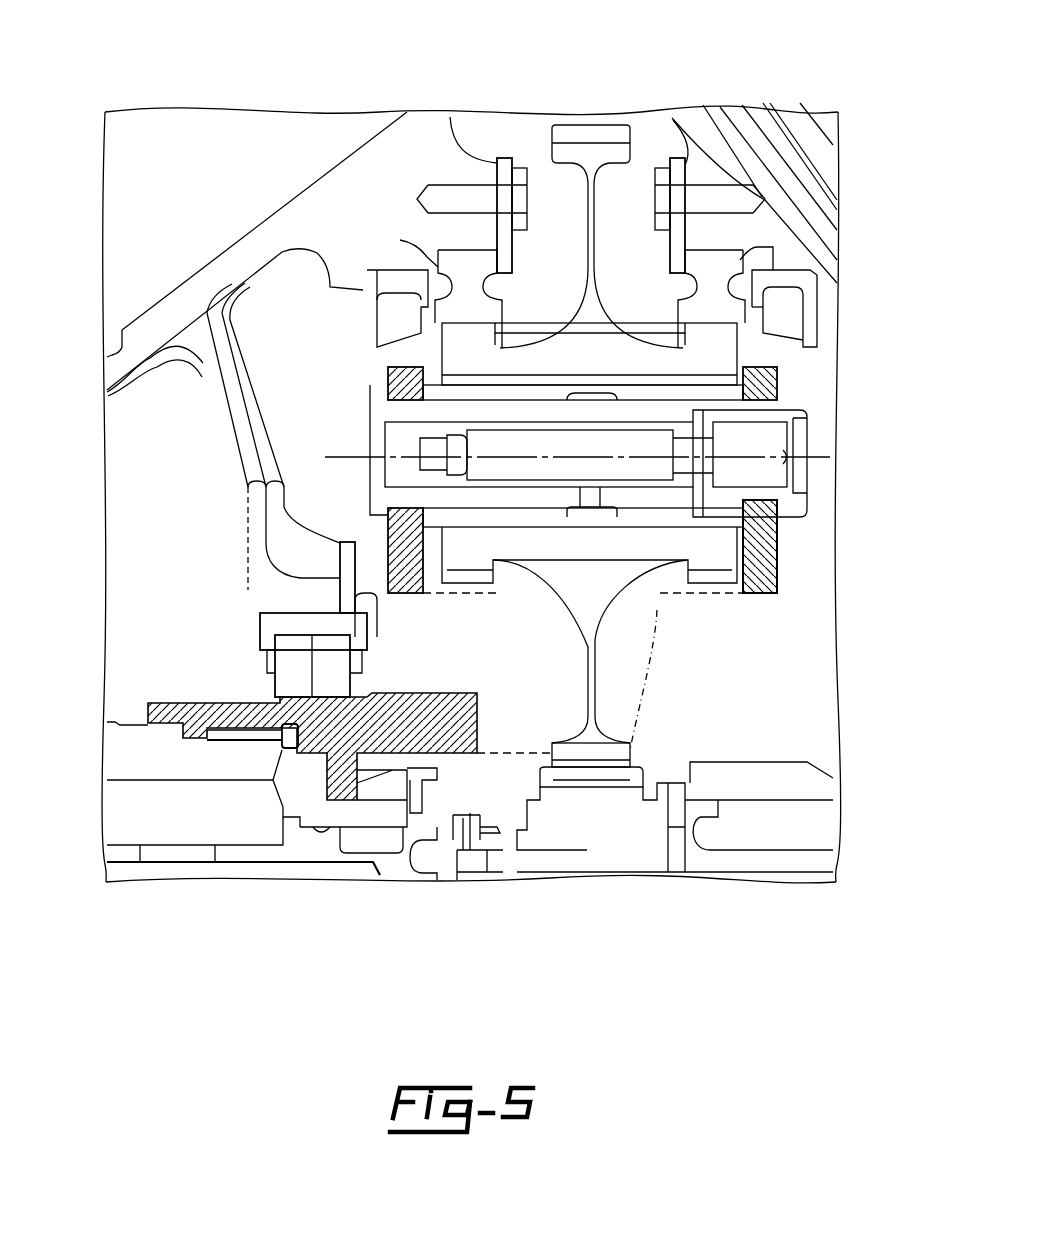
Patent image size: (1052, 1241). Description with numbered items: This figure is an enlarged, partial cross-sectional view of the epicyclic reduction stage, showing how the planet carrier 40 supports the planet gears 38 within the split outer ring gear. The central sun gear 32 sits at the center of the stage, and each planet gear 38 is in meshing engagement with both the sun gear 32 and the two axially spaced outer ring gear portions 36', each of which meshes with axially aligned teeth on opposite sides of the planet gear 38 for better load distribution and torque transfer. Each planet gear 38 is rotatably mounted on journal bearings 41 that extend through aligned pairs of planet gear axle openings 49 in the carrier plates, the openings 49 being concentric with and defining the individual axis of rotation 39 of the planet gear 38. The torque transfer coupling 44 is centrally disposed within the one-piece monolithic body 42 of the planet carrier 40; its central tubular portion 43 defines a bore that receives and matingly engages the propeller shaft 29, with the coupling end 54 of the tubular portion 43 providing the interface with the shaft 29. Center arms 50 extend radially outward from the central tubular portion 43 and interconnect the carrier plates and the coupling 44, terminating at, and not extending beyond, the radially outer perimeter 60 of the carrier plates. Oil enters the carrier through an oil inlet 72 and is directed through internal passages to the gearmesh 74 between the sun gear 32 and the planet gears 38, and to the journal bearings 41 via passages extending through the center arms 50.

The propeller shaft 29 is at (237, 763).
The central sun gear 32 is at (578, 811).
The outer ring gear portion 36' is at (664, 188).
The planet gear 38 is at (594, 223).
The individual axis of rotation 39 is at (825, 468).
The planet carrier 40 is at (784, 547).
The body 42 is at (770, 543).
The journal bearing 41 is at (638, 533).
The central tubular portion 43 is at (403, 703).
The torque transfer coupling 44 is at (183, 705).
The planet gear axle opening 49 is at (405, 508).
The center arm 50 is at (507, 700).
The coupling end 54 is at (217, 733).
The radially outer perimeter 60 is at (407, 367).
The oil inlet 72 is at (288, 745).
The gearmesh 74 is at (607, 768).